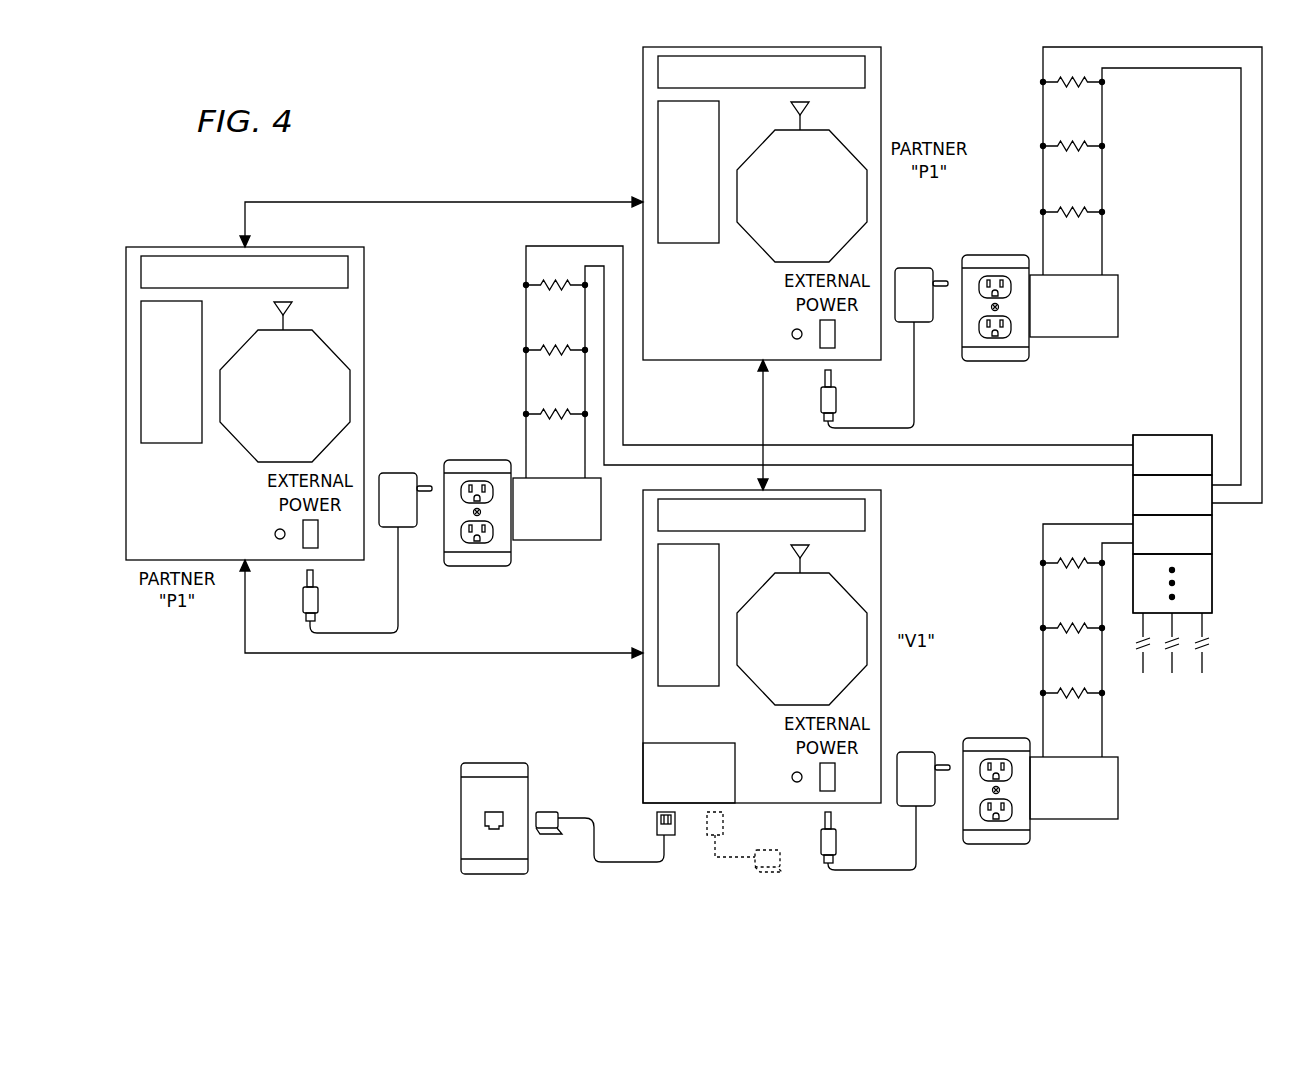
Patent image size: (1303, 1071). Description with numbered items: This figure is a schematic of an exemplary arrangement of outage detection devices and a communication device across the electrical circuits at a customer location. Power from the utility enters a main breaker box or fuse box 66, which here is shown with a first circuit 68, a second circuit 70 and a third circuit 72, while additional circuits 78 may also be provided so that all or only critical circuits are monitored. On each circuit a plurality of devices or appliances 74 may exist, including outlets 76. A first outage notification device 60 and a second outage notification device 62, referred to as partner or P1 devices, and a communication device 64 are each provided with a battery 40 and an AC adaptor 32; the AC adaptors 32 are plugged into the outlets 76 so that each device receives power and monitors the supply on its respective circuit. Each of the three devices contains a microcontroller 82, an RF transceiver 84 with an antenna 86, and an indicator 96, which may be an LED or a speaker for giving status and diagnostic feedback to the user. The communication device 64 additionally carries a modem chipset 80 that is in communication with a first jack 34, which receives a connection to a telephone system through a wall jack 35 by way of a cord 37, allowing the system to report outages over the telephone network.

The AC adaptor 32 is at (403, 473).
The first jack 34 is at (657, 826).
The wall jack 35 is at (461, 818).
The telephone cord 37 is at (578, 814).
The battery 40 is at (240, 288).
The first outage notification device 60 is at (172, 247).
The second outage notification device 62 is at (881, 113).
The communication device 64 is at (881, 556).
The fuse box 66 is at (1223, 570).
The first circuit 68 is at (553, 540).
The second circuit 70 is at (1072, 337).
The third circuit 72 is at (1073, 819).
The devices or appliances 74 is at (553, 292).
The outlet 76 is at (482, 460).
The additional circuit 78 is at (1212, 603).
The modem chipset 80 is at (708, 743).
The microcontroller 82 is at (170, 443).
The RF transceiver 84 is at (237, 440).
The antenna 86 is at (285, 323).
The indicator 96 is at (275, 534).